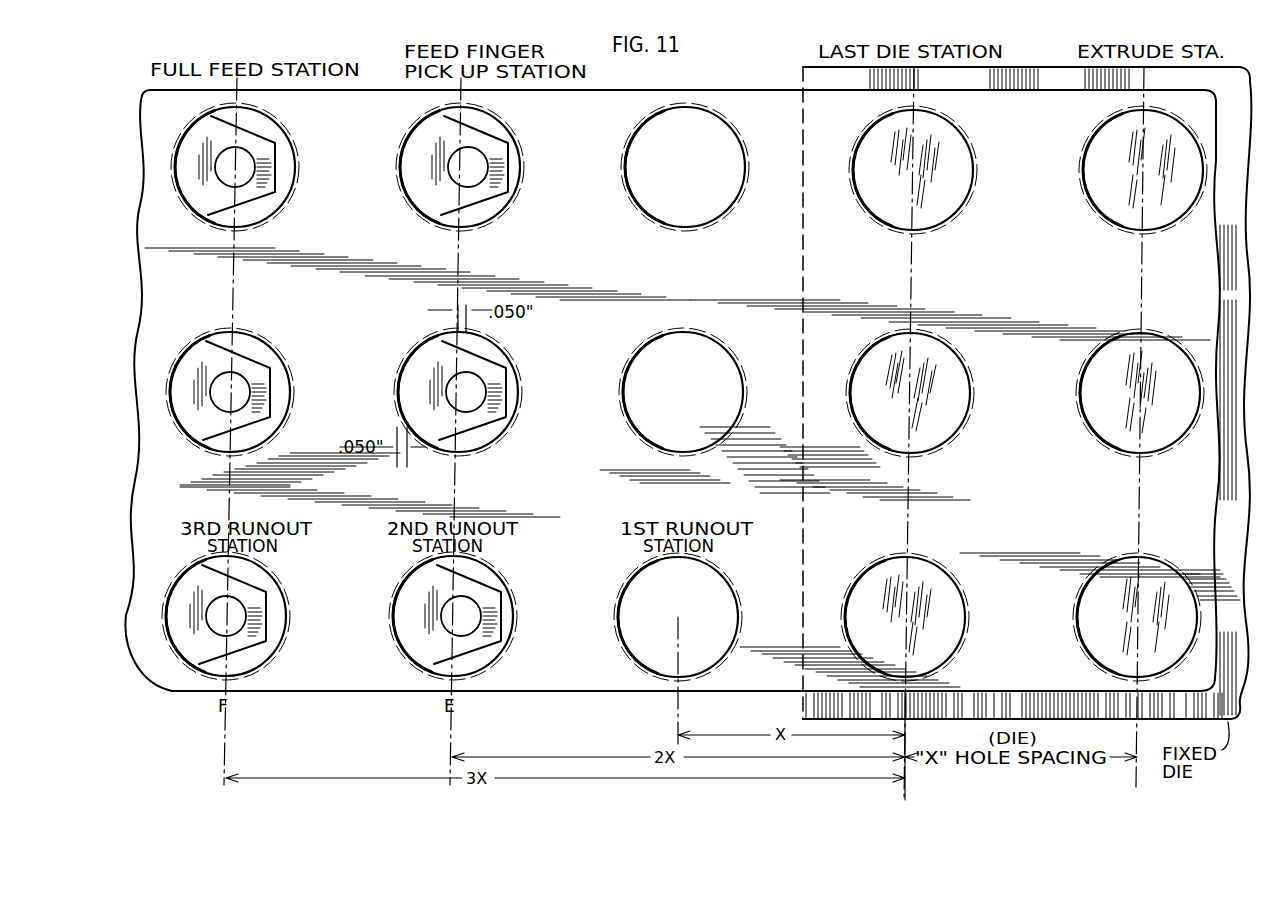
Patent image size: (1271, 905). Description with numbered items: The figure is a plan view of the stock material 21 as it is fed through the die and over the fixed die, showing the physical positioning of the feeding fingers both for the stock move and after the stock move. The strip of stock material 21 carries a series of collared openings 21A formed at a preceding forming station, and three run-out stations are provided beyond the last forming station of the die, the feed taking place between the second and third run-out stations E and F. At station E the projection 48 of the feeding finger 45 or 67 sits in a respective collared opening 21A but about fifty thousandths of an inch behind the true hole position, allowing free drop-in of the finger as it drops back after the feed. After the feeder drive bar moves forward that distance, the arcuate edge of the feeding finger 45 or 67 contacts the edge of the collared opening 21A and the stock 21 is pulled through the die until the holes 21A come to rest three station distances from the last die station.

The stock material 21 is at (673, 102).
The collared opening 21A is at (288, 186).
The projection 48 is at (192, 157).
The feeding finger 45 is at (406, 391).
The feeding finger 67 is at (243, 392).